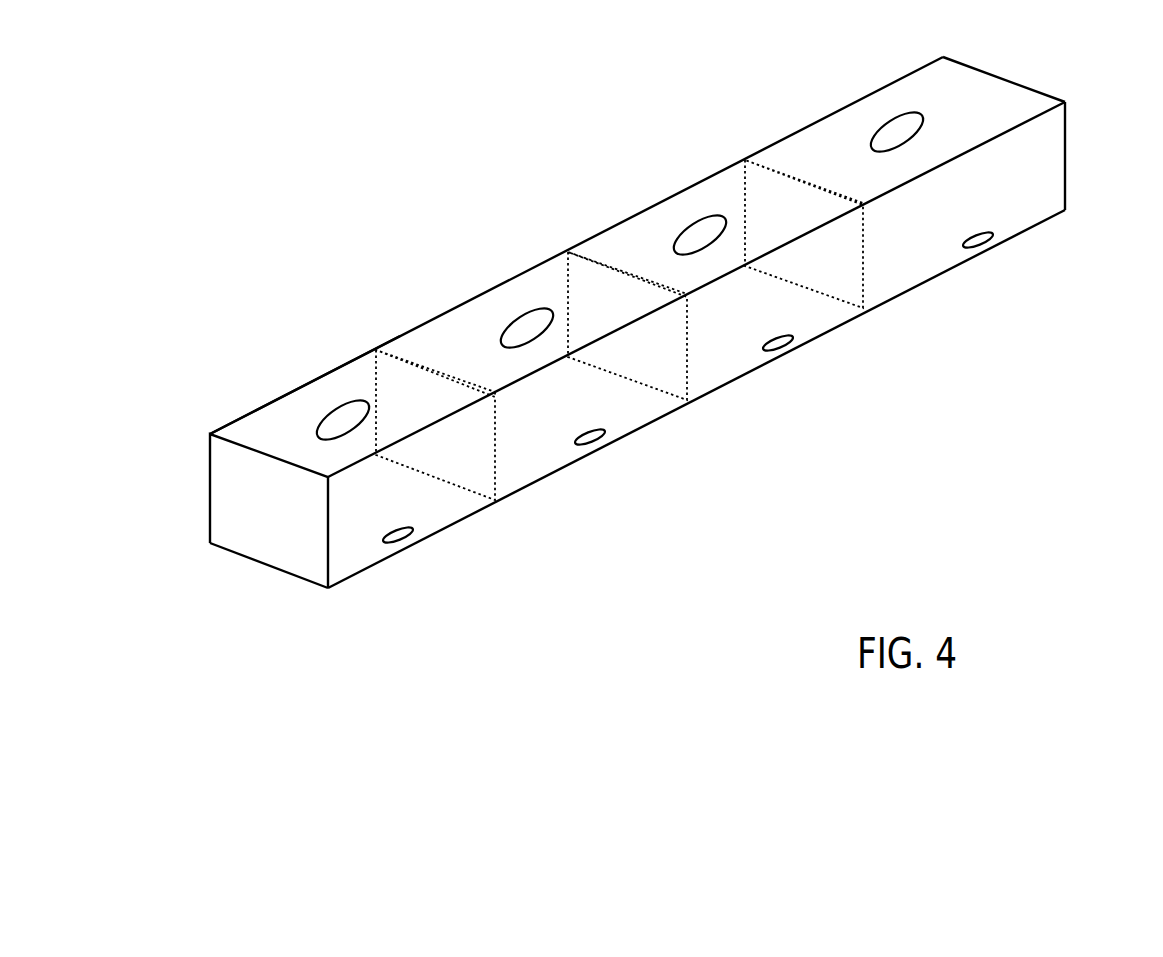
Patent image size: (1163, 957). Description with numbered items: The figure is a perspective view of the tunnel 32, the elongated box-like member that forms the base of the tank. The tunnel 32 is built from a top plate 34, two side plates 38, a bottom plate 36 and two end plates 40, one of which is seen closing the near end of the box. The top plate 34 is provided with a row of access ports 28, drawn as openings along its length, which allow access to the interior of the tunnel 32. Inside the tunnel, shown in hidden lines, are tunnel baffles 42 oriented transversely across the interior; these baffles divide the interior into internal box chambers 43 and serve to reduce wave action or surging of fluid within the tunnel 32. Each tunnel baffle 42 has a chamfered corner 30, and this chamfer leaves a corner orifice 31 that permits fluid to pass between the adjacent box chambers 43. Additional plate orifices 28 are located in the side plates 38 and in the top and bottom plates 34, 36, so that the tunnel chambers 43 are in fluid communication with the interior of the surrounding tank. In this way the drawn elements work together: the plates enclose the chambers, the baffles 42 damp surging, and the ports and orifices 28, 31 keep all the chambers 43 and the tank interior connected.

The access ports 28 is at (690, 365).
The chamfered corner 30 is at (641, 330).
The corner orifice 31 is at (696, 399).
The tunnel 32 is at (630, 354).
The top plate 34 is at (637, 242).
The bottom plate 36 is at (254, 600).
The side plates 38 is at (1089, 155).
The end plates 40 is at (223, 511).
The tunnel baffle 42 is at (696, 289).
The box chambers 43 is at (305, 385).